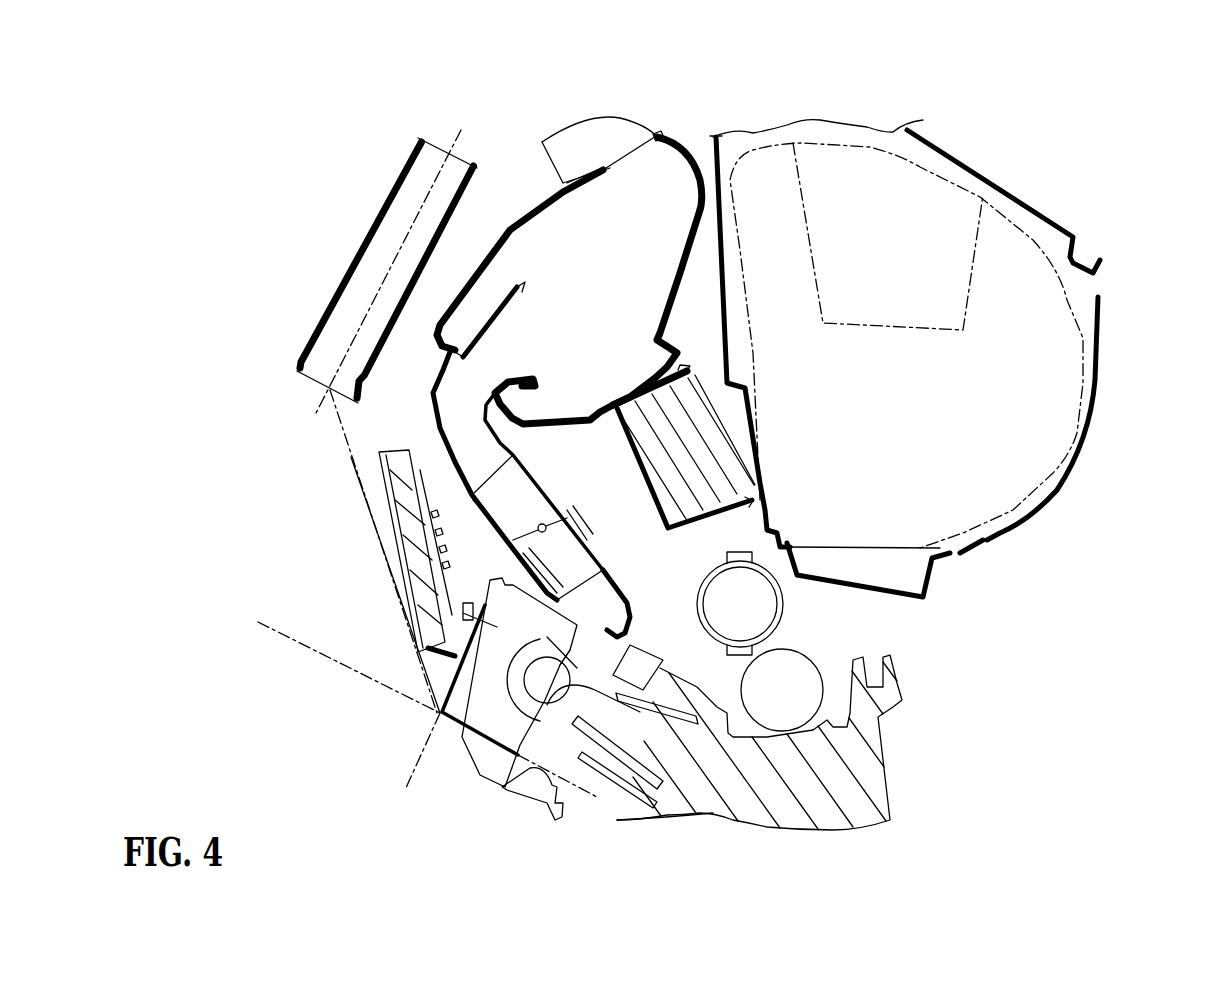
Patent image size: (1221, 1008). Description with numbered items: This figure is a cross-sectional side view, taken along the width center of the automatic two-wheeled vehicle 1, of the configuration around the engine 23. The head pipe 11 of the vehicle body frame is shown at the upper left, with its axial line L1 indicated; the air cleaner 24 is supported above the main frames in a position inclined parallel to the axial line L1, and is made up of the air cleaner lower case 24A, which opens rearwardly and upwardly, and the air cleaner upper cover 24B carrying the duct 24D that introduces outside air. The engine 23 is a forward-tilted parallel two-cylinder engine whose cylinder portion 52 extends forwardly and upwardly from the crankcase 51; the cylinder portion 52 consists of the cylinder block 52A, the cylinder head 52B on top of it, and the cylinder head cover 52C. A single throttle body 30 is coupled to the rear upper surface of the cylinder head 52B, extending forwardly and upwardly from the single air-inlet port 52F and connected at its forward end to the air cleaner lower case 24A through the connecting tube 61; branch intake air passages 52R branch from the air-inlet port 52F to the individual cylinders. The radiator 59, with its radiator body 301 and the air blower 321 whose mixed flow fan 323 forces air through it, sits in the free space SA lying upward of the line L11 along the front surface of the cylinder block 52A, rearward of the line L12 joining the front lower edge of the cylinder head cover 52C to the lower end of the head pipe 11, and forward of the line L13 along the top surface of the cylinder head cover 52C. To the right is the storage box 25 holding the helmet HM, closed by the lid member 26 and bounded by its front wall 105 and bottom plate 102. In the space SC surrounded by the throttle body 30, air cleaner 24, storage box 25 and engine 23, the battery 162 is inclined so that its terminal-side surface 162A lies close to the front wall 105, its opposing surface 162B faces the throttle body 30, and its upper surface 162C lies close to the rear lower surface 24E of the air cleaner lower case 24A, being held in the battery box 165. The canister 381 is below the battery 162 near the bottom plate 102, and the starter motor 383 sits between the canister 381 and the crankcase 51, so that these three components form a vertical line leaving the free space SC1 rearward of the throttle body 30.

The automatic two-wheeled vehicle 1 is at (900, 114).
The head pipe 11 is at (387, 210).
The engine 23 is at (713, 812).
The air cleaner 24 is at (569, 234).
The air cleaner lower case 24A is at (497, 248).
The air cleaner upper cover 24B is at (537, 205).
The duct 24D is at (582, 118).
The rear lower surface 24E is at (607, 417).
The storage box 25 is at (1105, 318).
The lid member 26 is at (1047, 217).
The throttle body 30 is at (545, 493).
The crankcase 51 is at (827, 720).
The cylinder portion 52 is at (543, 736).
The cylinder block 52A is at (620, 797).
The cylinder head 52B is at (500, 790).
The cylinder head cover 52C is at (437, 720).
The air-inlet port 52F is at (628, 597).
The branch intake air passages 52R is at (633, 638).
The radiator 59 is at (365, 457).
The connecting tube 61 is at (435, 375).
The bottom plate 102 is at (945, 560).
The front wall 105 is at (717, 338).
The battery 162 is at (713, 423).
The terminal-side surface 162A is at (685, 348).
The surface opposing the terminal-side surface 162B is at (600, 410).
The upper surface 162C is at (660, 395).
The battery box 165 is at (750, 518).
The radiator body 301 is at (383, 485).
The air blower 321 is at (349, 602).
The mixed flow fan 323 is at (349, 602).
The canister 381 is at (790, 608).
The starter motor 383 is at (820, 668).
The helmet HM is at (1003, 200).
The axial line of the head pipe L1 is at (403, 251).
The line extending along the front surface of the cylinder block L11 is at (286, 628).
The line connecting the front lower edge of the cylinder head cover and the lower en L12 is at (383, 587).
The line extending along the top surface of the cylinder head cover L13 is at (413, 747).
The free space SA is at (494, 560).
The space SC is at (681, 571).
The free space SC1 is at (642, 508).